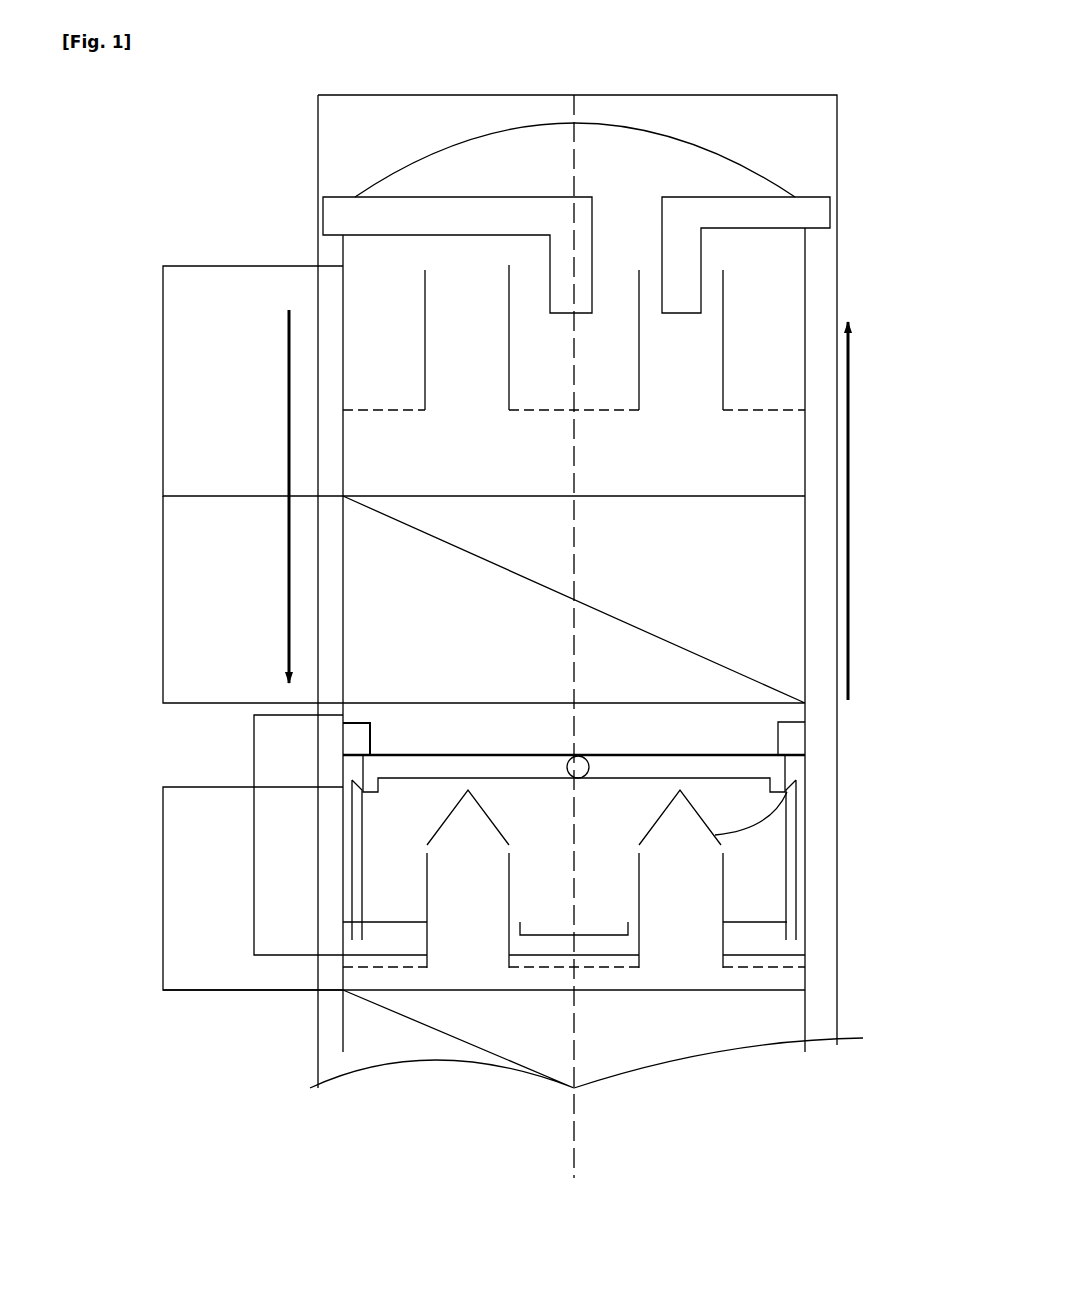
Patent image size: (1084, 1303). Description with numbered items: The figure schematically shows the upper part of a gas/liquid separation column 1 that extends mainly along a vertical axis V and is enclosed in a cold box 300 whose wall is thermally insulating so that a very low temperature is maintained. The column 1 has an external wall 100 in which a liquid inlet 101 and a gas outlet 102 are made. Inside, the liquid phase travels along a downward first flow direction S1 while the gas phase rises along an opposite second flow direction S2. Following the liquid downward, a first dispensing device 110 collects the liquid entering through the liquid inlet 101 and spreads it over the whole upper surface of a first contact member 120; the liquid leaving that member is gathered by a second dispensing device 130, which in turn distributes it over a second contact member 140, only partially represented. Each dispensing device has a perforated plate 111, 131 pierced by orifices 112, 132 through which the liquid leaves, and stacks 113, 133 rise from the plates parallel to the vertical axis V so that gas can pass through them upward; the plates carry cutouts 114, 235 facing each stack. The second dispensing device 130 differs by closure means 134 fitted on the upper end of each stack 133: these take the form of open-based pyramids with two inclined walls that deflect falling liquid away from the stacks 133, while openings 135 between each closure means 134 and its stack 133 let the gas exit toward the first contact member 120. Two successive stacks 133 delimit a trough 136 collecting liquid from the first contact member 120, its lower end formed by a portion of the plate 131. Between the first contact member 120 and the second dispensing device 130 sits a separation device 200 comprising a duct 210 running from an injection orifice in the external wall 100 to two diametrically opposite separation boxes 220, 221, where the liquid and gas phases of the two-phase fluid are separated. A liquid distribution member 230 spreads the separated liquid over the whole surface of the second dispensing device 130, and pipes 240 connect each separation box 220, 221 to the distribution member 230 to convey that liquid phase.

The gas/liquid separation column 1 is at (760, 135).
The external wall 100 is at (408, 152).
The liquid inlet 101 is at (323, 205).
The gas outlet 102 is at (812, 197).
The first dispensing device 110 is at (163, 383).
The perforated plate 111 is at (375, 410).
The orifices 112 is at (540, 403).
The stacks 113 is at (448, 335).
The cutouts 114 is at (672, 412).
The first contact member 120 is at (163, 601).
The second dispensing device 130 is at (163, 888).
The perforated plate 131 is at (765, 968).
The orifices 132 is at (790, 968).
The stacks 133 is at (440, 915).
The closure means 134 is at (805, 805).
The openings 135 is at (735, 852).
The trough 136 is at (592, 862).
The second contact member 140 is at (350, 1048).
The separation device 200 is at (254, 839).
The duct 210 is at (775, 768).
The separation box 220 is at (343, 755).
The separation box 221 is at (800, 740).
The liquid distribution member 230 is at (555, 933).
The cutouts 235 is at (458, 975).
The pipe 240 is at (358, 835).
The cold box 300 is at (318, 130).
The first flow direction S1 is at (289, 447).
The second flow direction S2 is at (848, 550).
The vertical axis V is at (574, 1133).